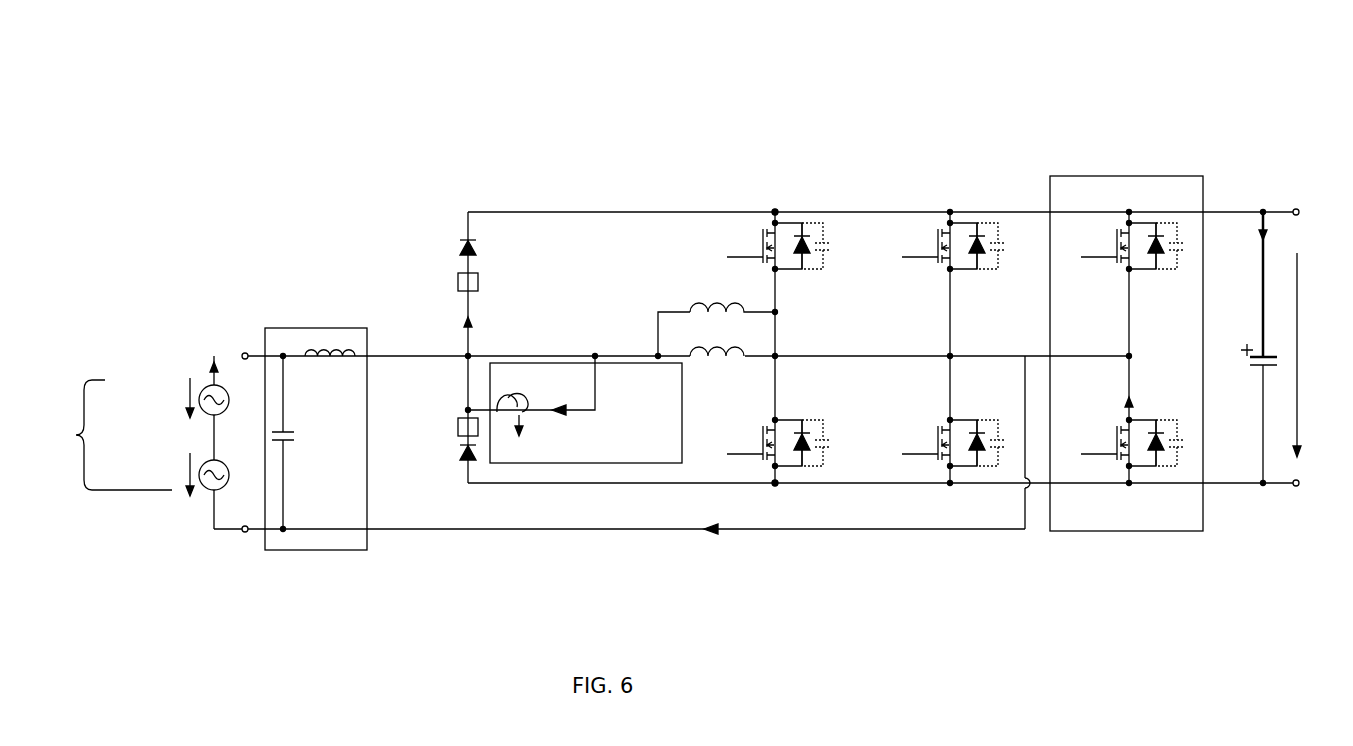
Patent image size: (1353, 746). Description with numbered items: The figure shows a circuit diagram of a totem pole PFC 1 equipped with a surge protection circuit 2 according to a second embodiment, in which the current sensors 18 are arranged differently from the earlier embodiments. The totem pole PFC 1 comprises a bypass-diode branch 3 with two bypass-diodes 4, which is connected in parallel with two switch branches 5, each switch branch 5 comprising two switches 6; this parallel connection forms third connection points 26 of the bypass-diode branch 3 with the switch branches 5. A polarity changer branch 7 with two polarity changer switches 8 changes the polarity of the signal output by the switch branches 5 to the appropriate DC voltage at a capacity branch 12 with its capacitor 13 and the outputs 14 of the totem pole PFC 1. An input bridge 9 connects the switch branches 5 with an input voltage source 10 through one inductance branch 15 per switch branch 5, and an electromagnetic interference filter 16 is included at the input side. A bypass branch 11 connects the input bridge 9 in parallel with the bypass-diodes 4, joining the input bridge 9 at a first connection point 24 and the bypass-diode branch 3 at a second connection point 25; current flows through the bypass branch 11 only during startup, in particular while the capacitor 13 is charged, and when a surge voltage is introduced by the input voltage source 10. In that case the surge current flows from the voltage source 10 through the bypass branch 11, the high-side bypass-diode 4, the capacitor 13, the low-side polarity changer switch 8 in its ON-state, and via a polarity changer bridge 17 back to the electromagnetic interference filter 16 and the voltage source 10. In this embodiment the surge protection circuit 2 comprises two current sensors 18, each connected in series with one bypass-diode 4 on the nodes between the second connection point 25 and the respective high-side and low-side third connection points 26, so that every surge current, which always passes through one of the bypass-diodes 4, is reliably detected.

The totem pole PFC 1 is at (896, 99).
The surge protection circuit 2 is at (543, 460).
The bypass-diode branch 3 is at (465, 236).
The bypass-diode 4 is at (477, 249).
The switch branch 5 is at (780, 294).
The switch 6 is at (767, 222).
The polarity changer branch 7 is at (1205, 282).
The polarity changer switch 8 is at (1118, 222).
The input bridge 9 is at (645, 354).
The input voltage source 10 is at (76, 436).
The bypass branch 11 is at (682, 397).
The capacity branch 12 is at (1263, 300).
The capacitor 13 is at (1266, 368).
The output 14 is at (1298, 208).
The inductance branch 15 is at (700, 305).
The electromagnetic interference filter 16 is at (315, 551).
The polarity changer bridge 17 is at (993, 531).
The current sensor 18 is at (458, 282).
The first connection point 24 is at (593, 354).
The second connection point 25 is at (466, 410).
The third connection point 26 is at (777, 212).